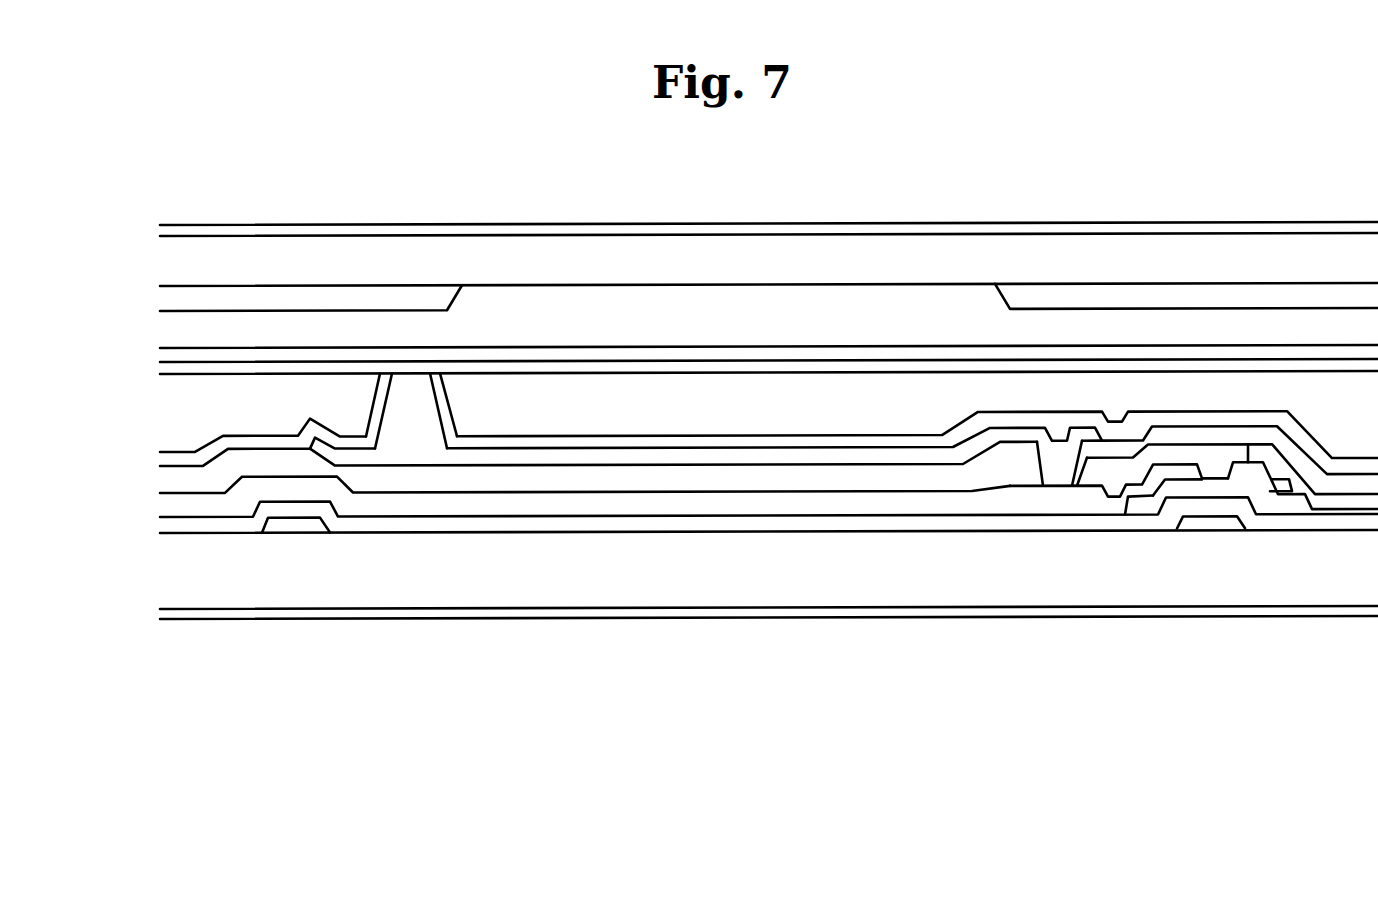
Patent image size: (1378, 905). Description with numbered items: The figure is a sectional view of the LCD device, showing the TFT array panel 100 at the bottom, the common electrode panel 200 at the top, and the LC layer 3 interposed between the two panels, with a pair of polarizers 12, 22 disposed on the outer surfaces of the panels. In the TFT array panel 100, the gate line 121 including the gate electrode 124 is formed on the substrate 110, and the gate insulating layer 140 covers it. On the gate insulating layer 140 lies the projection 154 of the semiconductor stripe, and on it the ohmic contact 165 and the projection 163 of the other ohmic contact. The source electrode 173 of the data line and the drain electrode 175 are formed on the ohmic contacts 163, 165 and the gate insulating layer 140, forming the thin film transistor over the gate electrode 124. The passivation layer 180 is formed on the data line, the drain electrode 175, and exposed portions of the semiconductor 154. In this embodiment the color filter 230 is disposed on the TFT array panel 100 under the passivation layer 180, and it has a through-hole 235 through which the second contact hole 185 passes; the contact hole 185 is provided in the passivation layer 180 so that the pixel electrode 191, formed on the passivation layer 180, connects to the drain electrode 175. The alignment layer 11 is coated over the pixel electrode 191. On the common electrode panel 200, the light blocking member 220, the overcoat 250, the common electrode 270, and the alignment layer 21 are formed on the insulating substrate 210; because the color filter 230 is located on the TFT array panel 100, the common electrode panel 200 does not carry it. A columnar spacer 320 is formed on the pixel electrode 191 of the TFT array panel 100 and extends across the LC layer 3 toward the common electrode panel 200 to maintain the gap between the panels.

The LC layer 3 is at (730, 423).
The alignment layer 11 is at (760, 443).
The polarizer 12 is at (543, 617).
The alignment layer 21 is at (560, 367).
The polarizer 22 is at (987, 228).
The TFT array panel 100 is at (717, 565).
The substrate 110 is at (607, 590).
The gate line 121 is at (298, 525).
The gate electrode 124 is at (1207, 527).
The gate insulating layer 140 is at (835, 525).
The projection 154 is at (1159, 500).
The projection 163 is at (1280, 485).
The ohmic contact 165 is at (1135, 497).
The source electrode 173 is at (1283, 497).
The drain electrode 175 is at (1067, 493).
The passivation layer 180 is at (418, 488).
The second contact hole 185 is at (1052, 469).
The pixel electrode 191 is at (670, 458).
The common electrode panel 200 is at (717, 304).
The insulating substrate 210 is at (905, 243).
The light blocking member 220 is at (435, 293).
The color filter 230 is at (495, 512).
The through-hole 235 is at (1070, 432).
The overcoat 250 is at (822, 298).
The common electrode 270 is at (648, 352).
The columnar spacer 320 is at (407, 380).